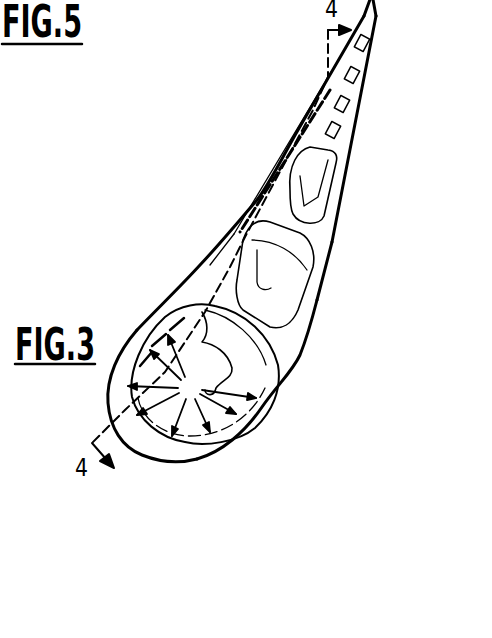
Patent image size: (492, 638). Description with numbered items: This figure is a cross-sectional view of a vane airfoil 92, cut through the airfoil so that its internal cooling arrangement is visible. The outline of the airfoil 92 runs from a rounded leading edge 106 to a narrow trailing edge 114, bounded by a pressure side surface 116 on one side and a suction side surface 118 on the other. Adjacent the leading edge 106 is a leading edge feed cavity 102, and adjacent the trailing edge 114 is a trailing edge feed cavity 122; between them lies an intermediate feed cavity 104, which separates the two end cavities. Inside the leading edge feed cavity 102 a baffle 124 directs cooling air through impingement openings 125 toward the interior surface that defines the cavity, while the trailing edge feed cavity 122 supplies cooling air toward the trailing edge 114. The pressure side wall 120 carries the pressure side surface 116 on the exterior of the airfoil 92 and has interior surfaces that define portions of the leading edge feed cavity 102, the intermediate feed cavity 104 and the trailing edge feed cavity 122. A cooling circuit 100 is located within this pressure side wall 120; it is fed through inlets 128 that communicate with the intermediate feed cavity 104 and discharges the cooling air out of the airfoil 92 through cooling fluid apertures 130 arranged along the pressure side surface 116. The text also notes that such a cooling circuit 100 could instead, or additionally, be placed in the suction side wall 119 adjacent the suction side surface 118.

The airfoil 92 is at (173, 148).
The cooling circuit 100 is at (270, 154).
The leading edge feed cavity 102 is at (252, 366).
The intermediate feed cavity 104 is at (312, 313).
The leading edge 106 is at (137, 443).
The trailing edge 114 is at (380, 6).
The pressure side surface 116 is at (218, 248).
The suction side surface 118 is at (340, 210).
The suction side wall 119 is at (330, 243).
The pressure side wall 120 is at (218, 268).
The trailing edge feed cavity 122 is at (328, 178).
The baffle 124 is at (200, 440).
The impingement openings 125 is at (262, 425).
The inlets 128 is at (300, 284).
The cooling fluid apertures 130 is at (322, 58).